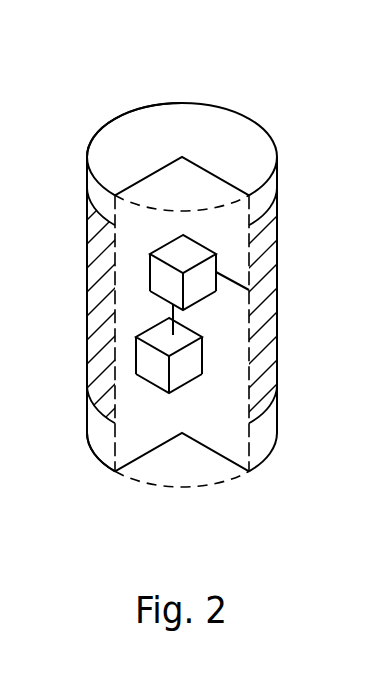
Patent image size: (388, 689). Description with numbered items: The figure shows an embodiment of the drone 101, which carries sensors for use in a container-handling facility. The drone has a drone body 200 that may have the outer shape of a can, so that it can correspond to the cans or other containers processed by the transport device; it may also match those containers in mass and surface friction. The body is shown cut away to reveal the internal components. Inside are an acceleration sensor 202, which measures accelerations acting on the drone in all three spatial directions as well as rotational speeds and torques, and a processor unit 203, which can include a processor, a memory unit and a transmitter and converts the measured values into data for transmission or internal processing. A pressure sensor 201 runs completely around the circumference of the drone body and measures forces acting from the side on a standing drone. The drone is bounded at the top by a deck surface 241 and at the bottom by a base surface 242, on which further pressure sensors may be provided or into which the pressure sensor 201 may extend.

The drone 101 is at (334, 104).
The drone body 200 is at (247, 130).
The pressure sensor 201 is at (265, 255).
The acceleration sensor 202 is at (178, 378).
The processor unit 203 is at (187, 248).
The deck surface 241 is at (110, 135).
The base surface 242 is at (100, 462).